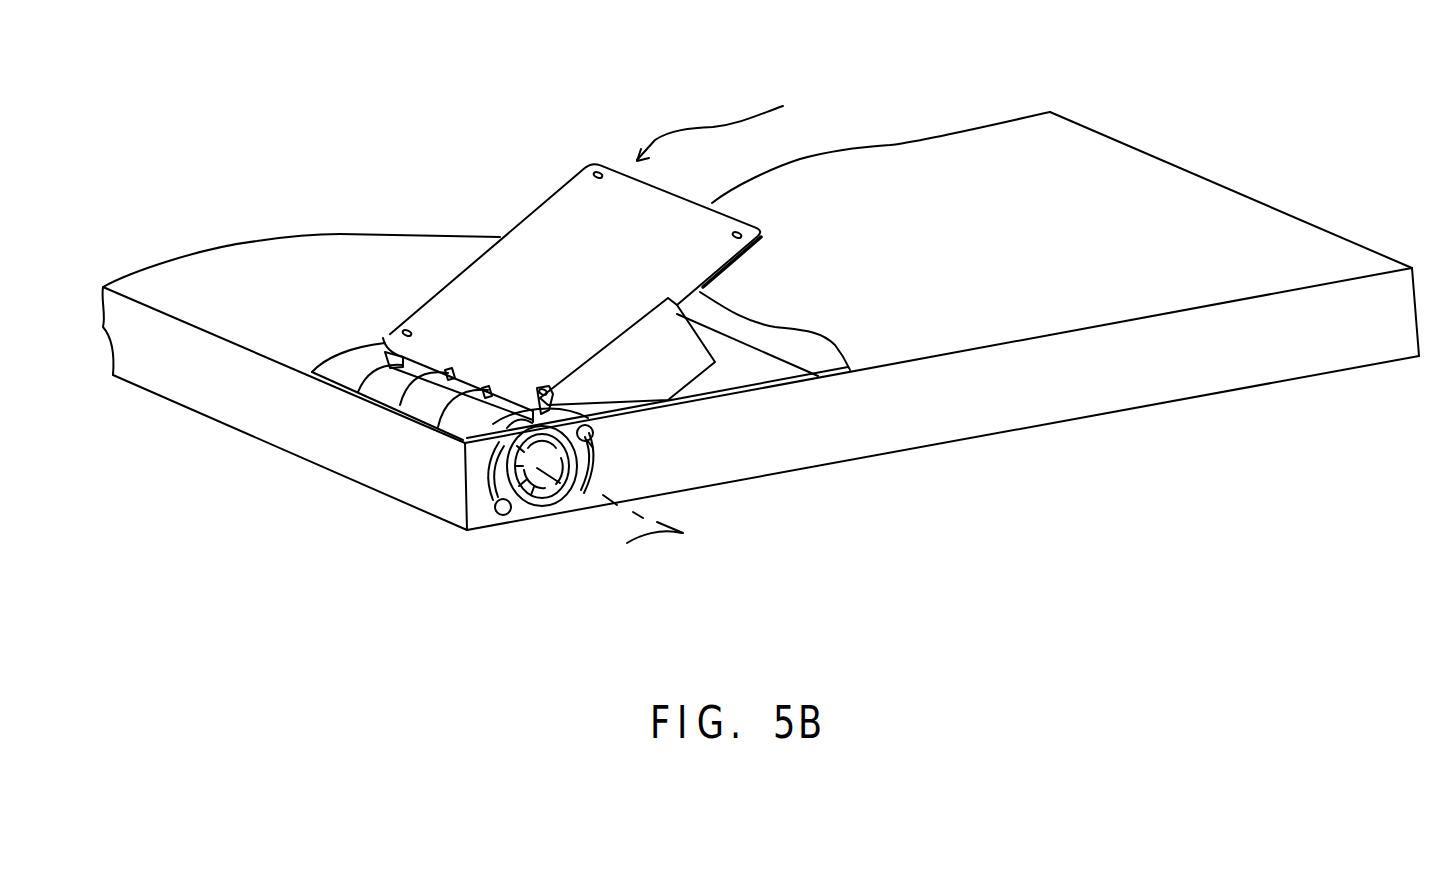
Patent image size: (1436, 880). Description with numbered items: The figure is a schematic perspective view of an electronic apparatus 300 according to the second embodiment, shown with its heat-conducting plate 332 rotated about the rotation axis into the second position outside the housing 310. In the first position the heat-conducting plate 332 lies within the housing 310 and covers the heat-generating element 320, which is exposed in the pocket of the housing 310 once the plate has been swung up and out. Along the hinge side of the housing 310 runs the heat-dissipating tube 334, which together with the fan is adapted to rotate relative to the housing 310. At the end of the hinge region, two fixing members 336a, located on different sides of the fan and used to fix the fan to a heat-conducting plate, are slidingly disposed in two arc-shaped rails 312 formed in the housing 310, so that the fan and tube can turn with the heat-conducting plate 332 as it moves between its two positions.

The electronic apparatus 300 is at (1334, 527).
The housing 310 is at (1118, 185).
The arc-shaped rails 312 is at (483, 471).
The heat-generating element 320 is at (744, 370).
The heat-conducting plate 332 is at (558, 214).
The heat-dissipating tube 334 is at (473, 426).
The fixing members 336a is at (503, 515).